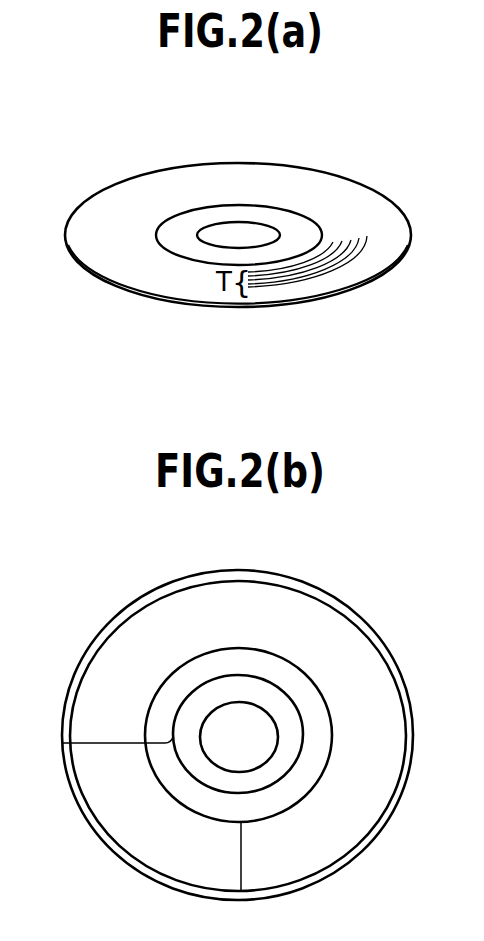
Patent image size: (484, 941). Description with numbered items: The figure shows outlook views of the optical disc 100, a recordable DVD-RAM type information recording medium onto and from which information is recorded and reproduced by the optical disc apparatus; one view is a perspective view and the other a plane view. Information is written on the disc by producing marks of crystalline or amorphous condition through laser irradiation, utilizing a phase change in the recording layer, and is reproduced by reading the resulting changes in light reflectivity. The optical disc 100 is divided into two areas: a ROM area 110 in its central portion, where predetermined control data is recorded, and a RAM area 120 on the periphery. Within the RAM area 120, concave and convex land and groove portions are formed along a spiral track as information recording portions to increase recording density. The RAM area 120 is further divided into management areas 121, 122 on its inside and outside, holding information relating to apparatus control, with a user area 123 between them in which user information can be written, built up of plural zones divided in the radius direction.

In FIG. 2A, the optical disc 100 is at (135, 298).
In FIG. 2A, the ROM area 110 is at (221, 216).
In FIG. 2B, the ROM area 110 is at (241, 772).
In FIG. 2A, the RAM area 120 is at (355, 213).
In FIG. 2B, the RAM area 120 is at (121, 743).
In FIG. 2B, the management area 121 is at (241, 793).
In FIG. 2B, the management area 122 is at (332, 872).
In FIG. 2B, the user area 123 is at (241, 849).